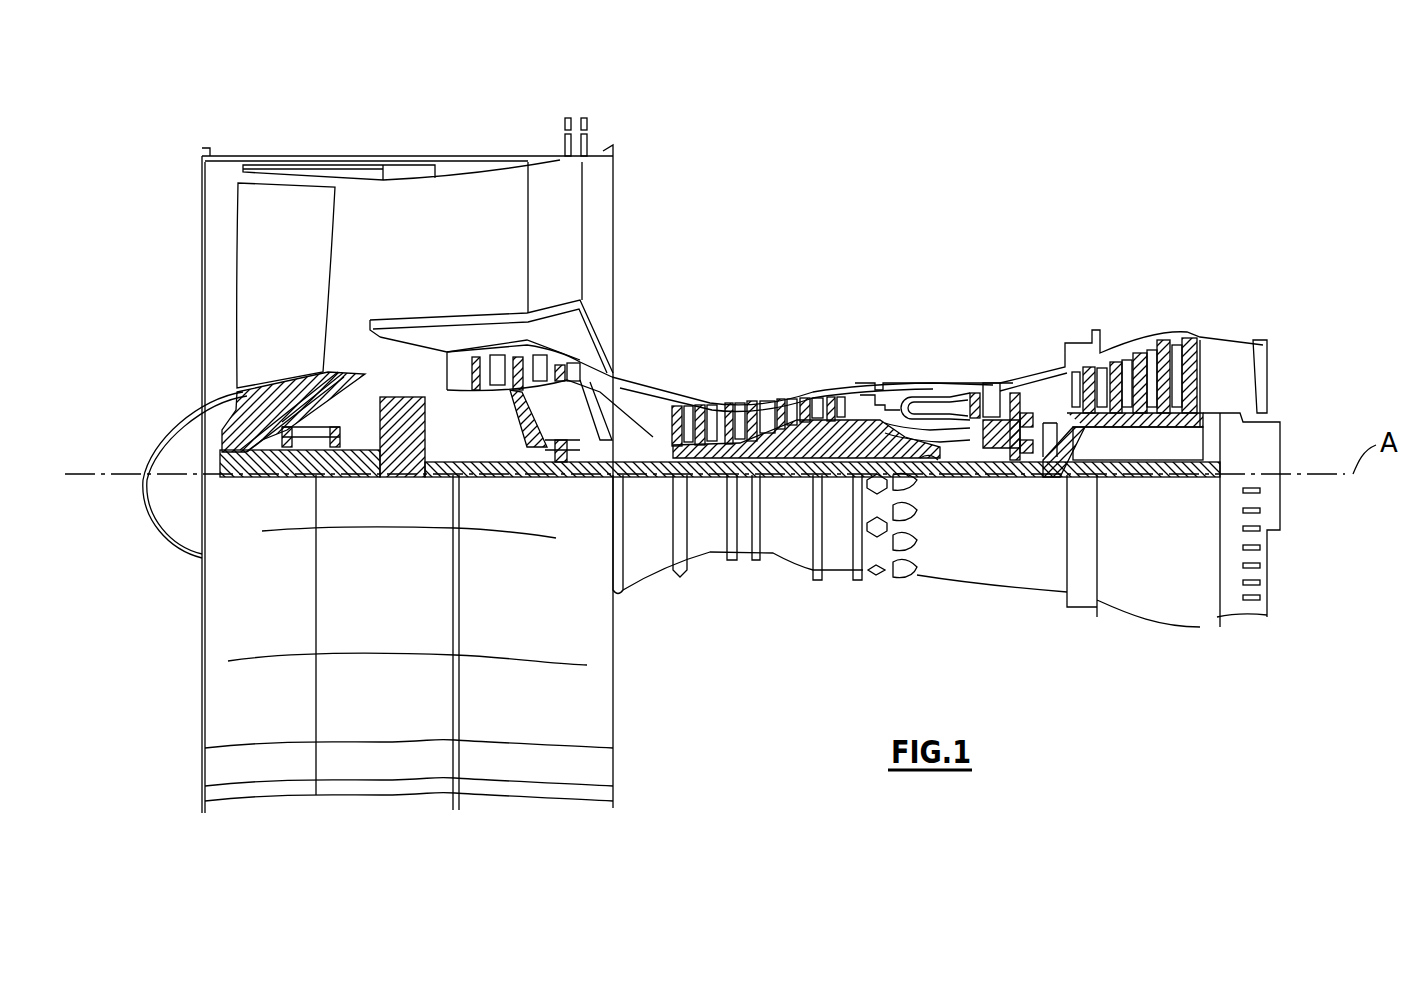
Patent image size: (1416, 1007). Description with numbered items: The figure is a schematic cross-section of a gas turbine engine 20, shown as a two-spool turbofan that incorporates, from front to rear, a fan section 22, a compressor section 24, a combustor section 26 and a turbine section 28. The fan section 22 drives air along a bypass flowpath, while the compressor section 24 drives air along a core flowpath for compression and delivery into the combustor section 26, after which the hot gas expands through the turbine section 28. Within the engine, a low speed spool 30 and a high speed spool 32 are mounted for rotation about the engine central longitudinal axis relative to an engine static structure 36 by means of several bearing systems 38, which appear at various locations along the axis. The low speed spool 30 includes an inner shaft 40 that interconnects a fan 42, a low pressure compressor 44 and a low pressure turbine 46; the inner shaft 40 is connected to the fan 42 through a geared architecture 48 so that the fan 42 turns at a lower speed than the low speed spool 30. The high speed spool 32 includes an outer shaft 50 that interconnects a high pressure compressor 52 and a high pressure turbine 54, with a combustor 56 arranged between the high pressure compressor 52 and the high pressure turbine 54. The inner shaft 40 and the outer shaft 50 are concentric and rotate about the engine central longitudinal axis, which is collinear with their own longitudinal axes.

The gas turbine engine 20 is at (945, 200).
The fan section 22 is at (327, 147).
The compressor section 24 is at (673, 369).
The combustor section 26 is at (920, 352).
The turbine section 28 is at (1090, 314).
The low speed spool 30 is at (790, 480).
The high speed spool 32 is at (838, 437).
The engine static structure 36 is at (837, 577).
The bearing systems 38 is at (566, 475).
The inner shaft 40 is at (637, 478).
The fan 42 is at (295, 301).
The low pressure compressor 44 is at (540, 365).
The low pressure turbine 46 is at (1137, 352).
The geared architecture 48 is at (412, 474).
The outer shaft 50 is at (930, 466).
The high pressure compressor 52 is at (757, 402).
The high pressure turbine 54 is at (997, 383).
The combustor 56 is at (920, 409).